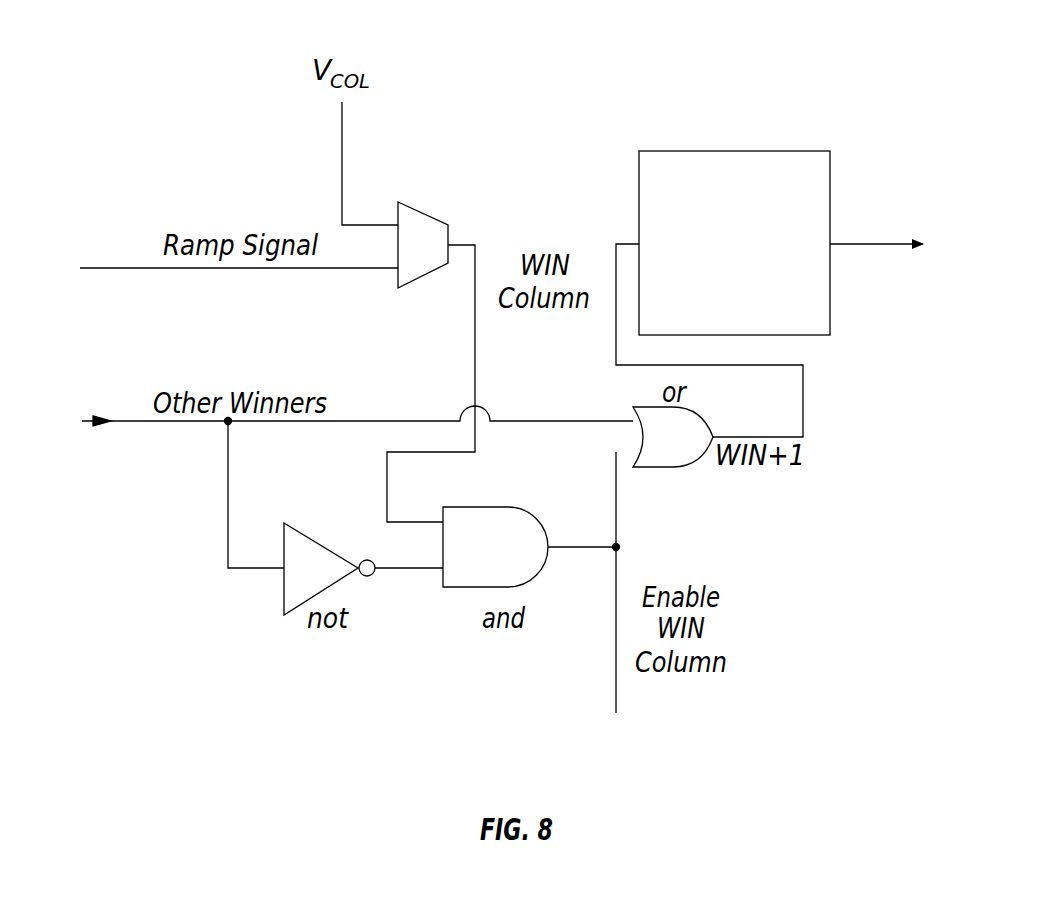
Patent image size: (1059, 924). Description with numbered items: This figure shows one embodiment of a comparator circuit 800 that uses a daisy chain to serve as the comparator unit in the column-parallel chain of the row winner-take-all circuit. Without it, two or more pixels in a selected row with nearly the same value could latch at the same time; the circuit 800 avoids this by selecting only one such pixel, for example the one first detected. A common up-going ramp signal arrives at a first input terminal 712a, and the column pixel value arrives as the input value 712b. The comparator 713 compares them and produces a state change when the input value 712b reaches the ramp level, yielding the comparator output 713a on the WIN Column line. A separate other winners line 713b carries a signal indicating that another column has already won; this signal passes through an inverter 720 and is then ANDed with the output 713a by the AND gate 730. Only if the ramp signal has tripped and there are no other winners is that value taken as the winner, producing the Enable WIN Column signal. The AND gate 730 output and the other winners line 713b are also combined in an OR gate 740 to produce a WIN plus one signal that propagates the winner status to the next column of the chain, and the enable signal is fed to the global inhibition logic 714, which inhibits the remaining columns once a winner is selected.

The comparator circuit 800 is at (840, 62).
The first input terminal 712a is at (137, 268).
The input value 712b is at (342, 165).
The comparator 713 is at (427, 213).
The comparator output 713a is at (475, 348).
The other winners line 713b is at (137, 421).
The inhibition logic 714 is at (783, 151).
The inverter 720 is at (315, 538).
The AND gate 730 is at (483, 507).
The OR gate 740 is at (660, 467).